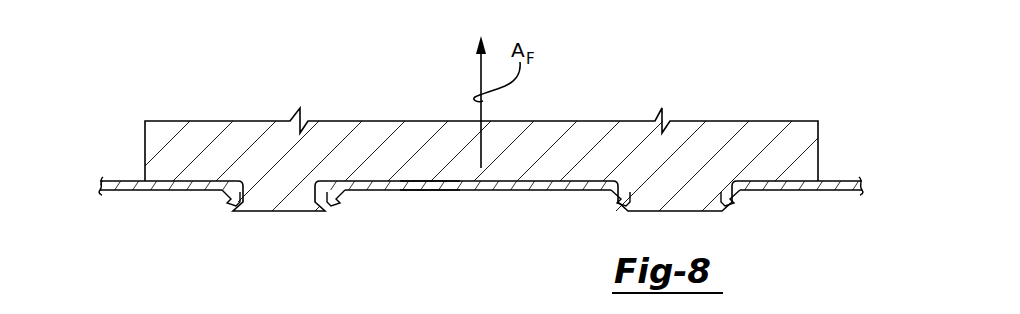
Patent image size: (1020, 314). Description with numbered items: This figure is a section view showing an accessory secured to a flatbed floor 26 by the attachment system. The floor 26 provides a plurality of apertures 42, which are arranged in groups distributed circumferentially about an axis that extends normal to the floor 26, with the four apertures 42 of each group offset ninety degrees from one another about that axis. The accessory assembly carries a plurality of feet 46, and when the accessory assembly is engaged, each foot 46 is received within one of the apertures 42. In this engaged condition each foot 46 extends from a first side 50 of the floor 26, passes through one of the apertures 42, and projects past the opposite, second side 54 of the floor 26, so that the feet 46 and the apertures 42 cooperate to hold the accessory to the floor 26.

The floor 26 is at (131, 186).
The apertures 42 is at (243, 210).
The feet 46 is at (293, 212).
The first side 50 is at (428, 192).
The second side 54 is at (533, 190).